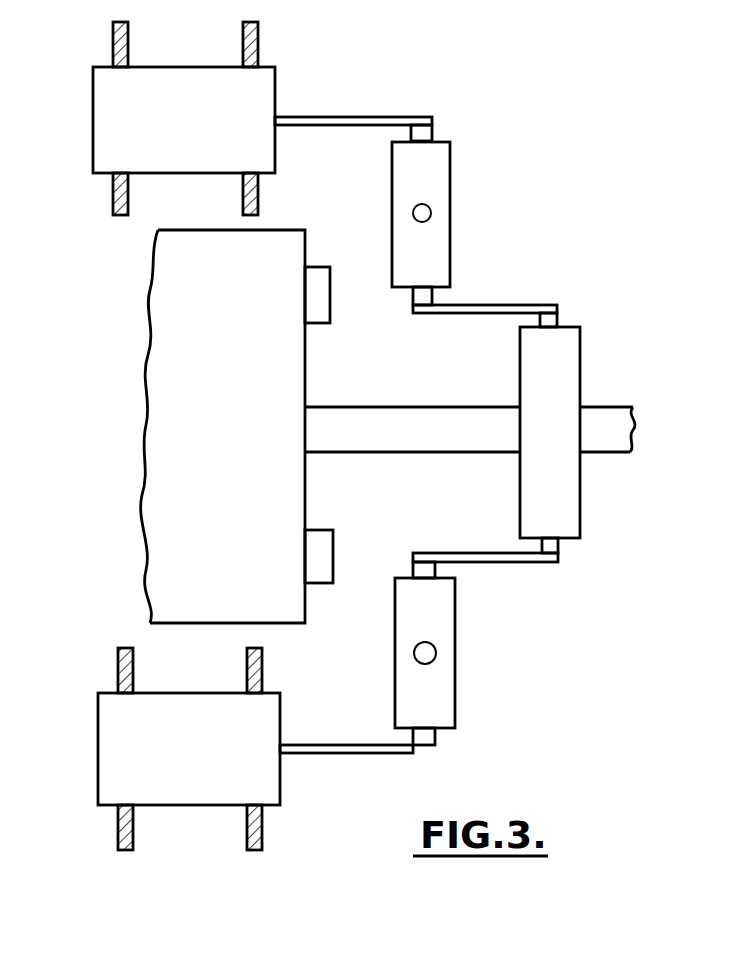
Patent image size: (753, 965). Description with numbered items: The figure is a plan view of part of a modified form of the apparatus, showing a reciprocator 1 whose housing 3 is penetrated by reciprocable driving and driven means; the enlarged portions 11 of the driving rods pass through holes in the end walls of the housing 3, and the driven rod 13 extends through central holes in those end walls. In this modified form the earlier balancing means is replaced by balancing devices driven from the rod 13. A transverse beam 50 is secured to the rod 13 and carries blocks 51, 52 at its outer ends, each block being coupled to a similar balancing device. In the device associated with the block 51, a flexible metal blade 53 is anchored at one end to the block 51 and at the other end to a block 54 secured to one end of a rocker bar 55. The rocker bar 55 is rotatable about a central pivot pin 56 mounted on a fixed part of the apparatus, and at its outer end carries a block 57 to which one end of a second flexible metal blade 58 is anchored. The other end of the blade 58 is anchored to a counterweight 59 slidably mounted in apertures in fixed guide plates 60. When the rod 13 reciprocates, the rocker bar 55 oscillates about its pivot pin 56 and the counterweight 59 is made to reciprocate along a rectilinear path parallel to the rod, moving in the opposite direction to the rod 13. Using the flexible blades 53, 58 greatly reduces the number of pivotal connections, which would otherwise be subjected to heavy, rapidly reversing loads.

The reciprocator 1 is at (122, 361).
The housing 3 is at (183, 293).
The rod portions 11 is at (325, 275).
The rod 13 is at (415, 432).
The transverse beam 50 is at (563, 352).
The block 51 is at (556, 316).
The block 52 is at (555, 545).
The flexible metal blade 53 is at (513, 305).
The block 54 is at (415, 295).
The rocker bar 55 is at (437, 255).
The pivot pin 56 is at (430, 208).
The block 57 is at (432, 130).
The flexible metal blade 58 is at (355, 116).
The counterweight 59 is at (201, 82).
The guide plates 60 is at (118, 38).